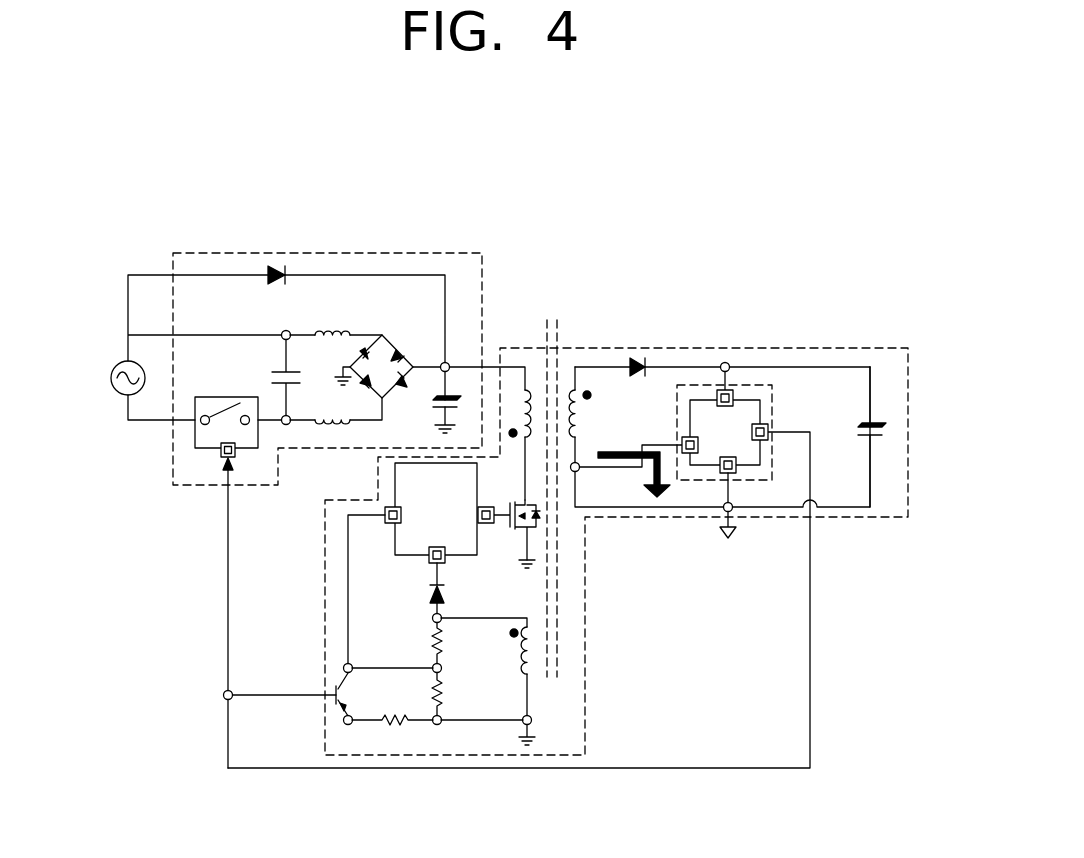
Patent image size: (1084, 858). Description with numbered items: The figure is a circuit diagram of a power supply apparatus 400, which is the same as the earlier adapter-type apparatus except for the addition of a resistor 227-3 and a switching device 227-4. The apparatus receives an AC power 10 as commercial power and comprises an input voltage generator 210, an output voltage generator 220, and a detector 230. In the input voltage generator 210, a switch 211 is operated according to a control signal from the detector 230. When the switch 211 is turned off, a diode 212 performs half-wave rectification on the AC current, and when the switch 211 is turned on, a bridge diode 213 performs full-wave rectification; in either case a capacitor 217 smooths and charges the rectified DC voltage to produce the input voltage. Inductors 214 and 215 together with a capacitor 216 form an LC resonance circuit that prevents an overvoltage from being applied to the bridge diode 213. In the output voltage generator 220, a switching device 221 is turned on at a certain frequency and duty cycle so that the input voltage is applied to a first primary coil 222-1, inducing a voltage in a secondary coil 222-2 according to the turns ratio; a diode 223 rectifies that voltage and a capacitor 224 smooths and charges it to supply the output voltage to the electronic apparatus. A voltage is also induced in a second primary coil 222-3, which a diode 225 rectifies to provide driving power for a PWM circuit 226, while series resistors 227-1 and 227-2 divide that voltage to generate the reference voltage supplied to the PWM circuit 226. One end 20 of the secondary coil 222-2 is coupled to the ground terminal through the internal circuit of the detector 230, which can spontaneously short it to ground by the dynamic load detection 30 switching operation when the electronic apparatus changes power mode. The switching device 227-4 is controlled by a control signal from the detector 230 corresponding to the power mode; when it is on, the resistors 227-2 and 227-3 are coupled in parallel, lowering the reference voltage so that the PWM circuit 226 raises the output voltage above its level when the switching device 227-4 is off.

The power supply apparatus 400 is at (534, 174).
The AC power 10 is at (111, 378).
The input voltage generator 210 is at (186, 246).
The switch 211 is at (246, 459).
The diode 212 is at (278, 263).
The bridge diode 213 is at (399, 358).
The inductor 214 is at (330, 330).
The inductor 215 is at (330, 425).
The capacitor 216 is at (270, 378).
The capacitor 217 is at (438, 408).
The output voltage generator 220 is at (876, 341).
The switching device 221 is at (517, 531).
The first primary coil 222-1 is at (520, 400).
The secondary coil 222-2 is at (578, 408).
The second primary coil 222-3 is at (538, 652).
The diode 223 is at (640, 356).
The capacitor 224 is at (863, 432).
The diode 225 is at (428, 597).
The PWM circuit 226 is at (395, 540).
The resistor 227-1 is at (430, 633).
The resistor 227-2 is at (448, 694).
The resistor 227-3 is at (394, 728).
The switching device 227-4 is at (334, 688).
The detector 230 is at (753, 482).
The one end of the secondary coil 20 is at (577, 470).
The dynamic load detection 30 is at (630, 462).